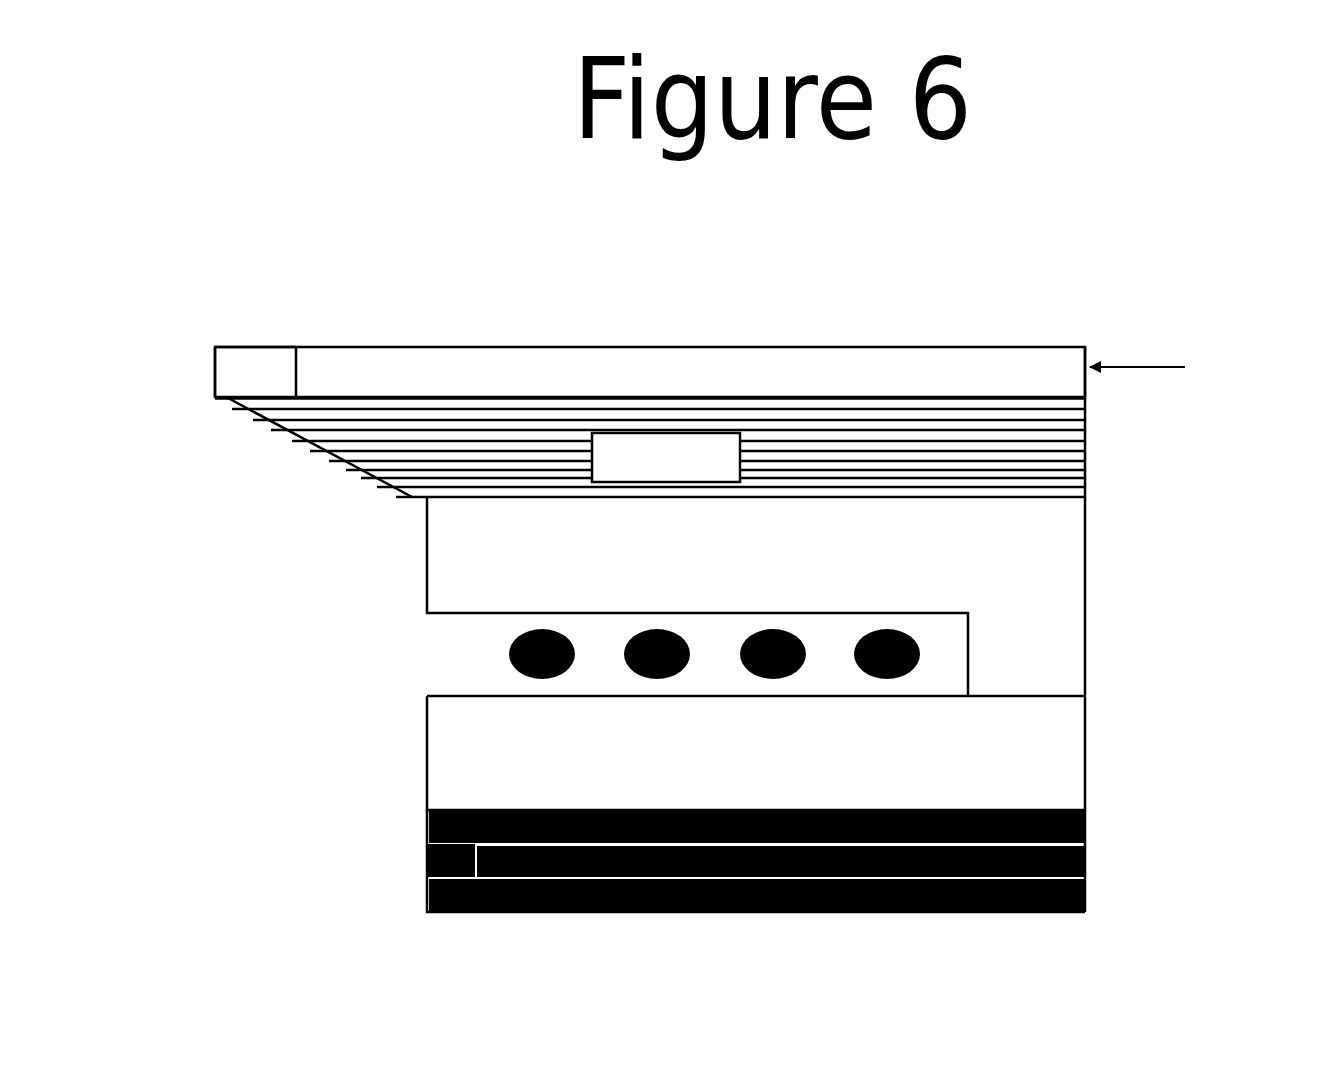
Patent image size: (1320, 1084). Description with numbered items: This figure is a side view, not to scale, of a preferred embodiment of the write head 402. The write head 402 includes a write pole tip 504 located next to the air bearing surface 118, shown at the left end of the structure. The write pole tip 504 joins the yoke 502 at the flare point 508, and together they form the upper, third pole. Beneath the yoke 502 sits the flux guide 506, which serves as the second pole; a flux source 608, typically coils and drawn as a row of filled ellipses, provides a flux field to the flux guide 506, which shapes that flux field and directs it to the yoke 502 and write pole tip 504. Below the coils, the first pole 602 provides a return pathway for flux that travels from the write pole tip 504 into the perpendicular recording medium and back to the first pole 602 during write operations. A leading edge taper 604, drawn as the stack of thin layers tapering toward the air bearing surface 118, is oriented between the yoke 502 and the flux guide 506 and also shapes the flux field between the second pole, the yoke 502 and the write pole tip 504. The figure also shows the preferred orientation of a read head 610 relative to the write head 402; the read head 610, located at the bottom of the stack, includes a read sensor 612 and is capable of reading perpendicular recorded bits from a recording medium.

The write head 402 is at (1168, 250).
The air bearing surface 118 is at (183, 340).
The flare point 508 is at (297, 347).
The write pole tip 504 is at (215, 372).
The yoke 502 is at (1068, 383).
The leading edge taper 604 is at (313, 449).
The flux guide 506 is at (1085, 533).
The flux source 608 is at (510, 658).
The P1 602 is at (1086, 790).
The read head 610 is at (1087, 813).
The read sensor 612 is at (427, 858).